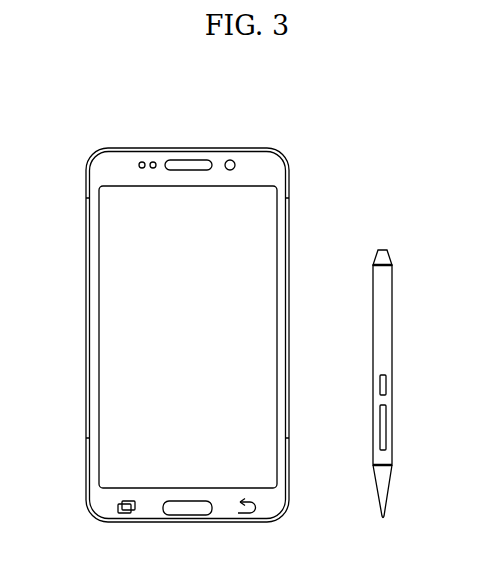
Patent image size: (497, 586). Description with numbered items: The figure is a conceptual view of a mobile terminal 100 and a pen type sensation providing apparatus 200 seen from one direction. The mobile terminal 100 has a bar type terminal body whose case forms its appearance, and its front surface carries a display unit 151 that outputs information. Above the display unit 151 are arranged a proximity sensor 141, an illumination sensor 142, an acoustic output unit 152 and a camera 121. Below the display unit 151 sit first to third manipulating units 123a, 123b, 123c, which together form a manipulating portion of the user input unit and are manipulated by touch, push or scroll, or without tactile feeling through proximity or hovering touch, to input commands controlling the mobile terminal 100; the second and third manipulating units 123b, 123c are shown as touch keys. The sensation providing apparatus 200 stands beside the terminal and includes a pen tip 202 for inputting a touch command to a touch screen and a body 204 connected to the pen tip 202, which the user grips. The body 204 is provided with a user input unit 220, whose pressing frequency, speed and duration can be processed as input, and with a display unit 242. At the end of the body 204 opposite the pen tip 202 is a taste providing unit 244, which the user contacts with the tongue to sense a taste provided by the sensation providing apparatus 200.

The mobile terminal 100 is at (282, 136).
The display unit 151 is at (99, 287).
The proximity sensor 141 is at (141, 161).
The illumination sensor 142 is at (153, 161).
The acoustic output unit 152 is at (188, 160).
The camera 121 is at (231, 160).
The first manipulating unit 123a is at (189, 515).
The second manipulating unit 123b is at (126, 514).
The third manipulating unit 123c is at (245, 514).
The sensation providing apparatus 200 is at (386, 243).
The taste providing unit 244 is at (378, 258).
The display unit 242 is at (380, 385).
The user input unit 220 is at (380, 428).
The body 204 is at (400, 266).
The pen tip 202 is at (401, 468).